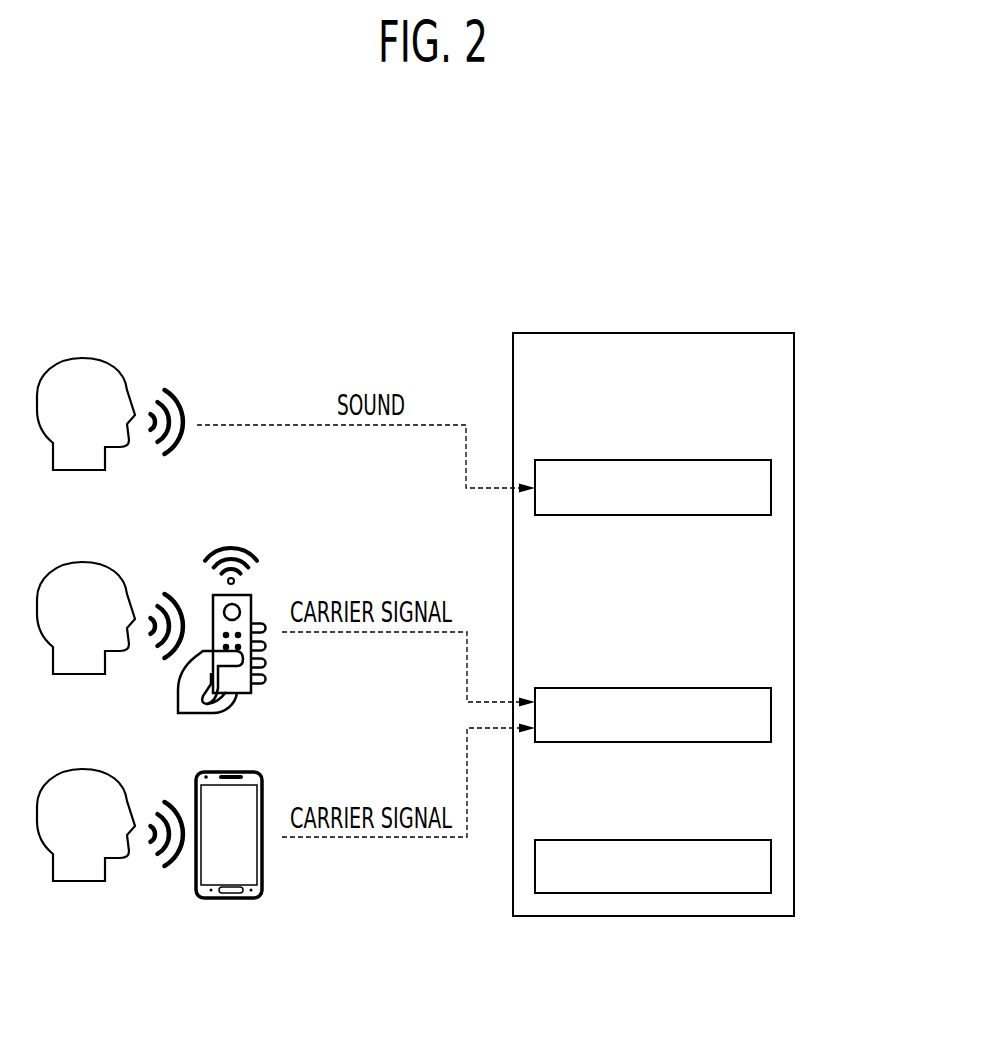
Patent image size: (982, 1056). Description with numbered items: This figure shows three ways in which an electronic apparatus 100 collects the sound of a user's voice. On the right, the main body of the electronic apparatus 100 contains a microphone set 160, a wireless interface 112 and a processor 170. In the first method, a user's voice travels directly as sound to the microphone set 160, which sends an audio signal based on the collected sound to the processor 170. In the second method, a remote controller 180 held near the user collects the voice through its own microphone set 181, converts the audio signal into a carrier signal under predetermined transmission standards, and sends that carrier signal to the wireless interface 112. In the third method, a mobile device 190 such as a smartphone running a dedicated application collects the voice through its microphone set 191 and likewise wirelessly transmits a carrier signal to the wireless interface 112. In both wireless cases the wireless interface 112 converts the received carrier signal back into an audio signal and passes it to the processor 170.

The electronic apparatus 100 is at (797, 355).
The microphone set 160 is at (773, 488).
The wireless interface 112 is at (773, 714).
The processor 170 is at (773, 866).
The remote controller 180 is at (262, 589).
The microphone set 181 is at (222, 606).
The mobile device 190 is at (286, 807).
The microphone set 191 is at (197, 774).